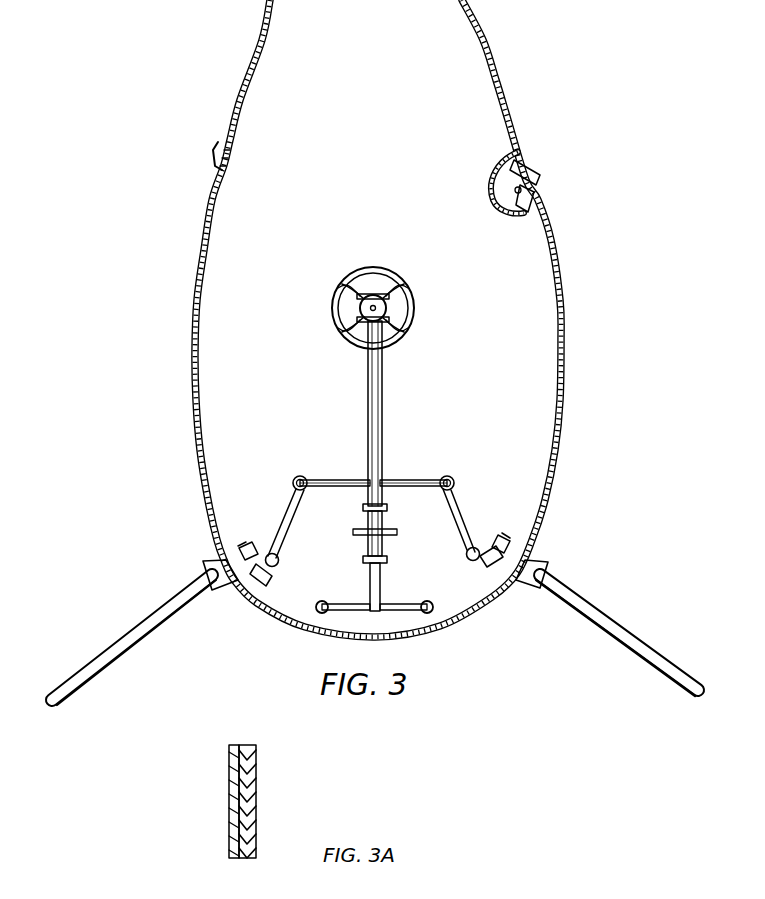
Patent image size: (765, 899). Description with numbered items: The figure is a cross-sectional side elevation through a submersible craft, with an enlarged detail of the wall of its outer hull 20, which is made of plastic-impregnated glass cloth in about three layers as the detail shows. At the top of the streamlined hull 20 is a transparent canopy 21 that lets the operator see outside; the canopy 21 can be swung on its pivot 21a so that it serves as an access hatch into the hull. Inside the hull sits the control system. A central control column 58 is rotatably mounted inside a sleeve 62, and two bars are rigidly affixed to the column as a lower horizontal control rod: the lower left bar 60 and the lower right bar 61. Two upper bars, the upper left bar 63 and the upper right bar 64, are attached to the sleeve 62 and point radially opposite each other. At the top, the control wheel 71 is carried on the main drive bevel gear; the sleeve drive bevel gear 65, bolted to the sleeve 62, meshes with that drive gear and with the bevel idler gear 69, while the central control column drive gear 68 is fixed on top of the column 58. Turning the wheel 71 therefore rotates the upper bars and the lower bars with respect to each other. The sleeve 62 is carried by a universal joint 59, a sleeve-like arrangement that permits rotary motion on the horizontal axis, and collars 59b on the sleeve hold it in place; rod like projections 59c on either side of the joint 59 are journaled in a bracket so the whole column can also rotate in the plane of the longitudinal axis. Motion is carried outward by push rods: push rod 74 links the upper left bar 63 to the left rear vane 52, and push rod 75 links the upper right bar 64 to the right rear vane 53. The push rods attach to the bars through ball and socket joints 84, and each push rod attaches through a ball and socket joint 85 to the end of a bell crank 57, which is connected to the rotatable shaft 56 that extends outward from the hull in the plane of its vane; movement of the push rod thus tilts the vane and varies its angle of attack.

In FIG. 3, the outer hull 20 is at (563, 326).
In FIG. 3A, the outer hull 20 is at (229, 803).
In FIG. 3, the transparent canopy 21 is at (486, 42).
In FIG. 3, the pivot 21a is at (538, 196).
In FIG. 3, the left rear vane 52 is at (632, 655).
In FIG. 3, the right rear vane 53 is at (120, 657).
In FIG. 3, the rotatable shaft 56 is at (247, 545).
In FIG. 3, the bell crank 57 is at (270, 548).
In FIG. 3, the central control column 58 is at (381, 572).
In FIG. 3, the universal joint 59 is at (383, 520).
In FIG. 3, the collar 59b is at (363, 507).
In FIG. 3, the rod like projection 59c is at (357, 536).
In FIG. 3, the lower left bar 60 is at (410, 603).
In FIG. 3, the lower right bar 61 is at (336, 603).
In FIG. 3, the sleeve 62 is at (383, 380).
In FIG. 3, the upper left bar 63 is at (430, 480).
In FIG. 3, the upper right bar 64 is at (316, 480).
In FIG. 3, the sleeve drive bevel gear 65 is at (396, 326).
In FIG. 3, the central control column drive gear 68 is at (357, 294).
In FIG. 3, the bevel idler gear 69 is at (380, 304).
In FIG. 3, the control wheel 71 is at (384, 268).
In FIG. 3, the push rod 74 is at (454, 520).
In FIG. 3, the push rod 75 is at (292, 530).
In FIG. 3, the ball and socket joint 84 is at (294, 478).
In FIG. 3, the ball and socket joint 85 is at (280, 565).